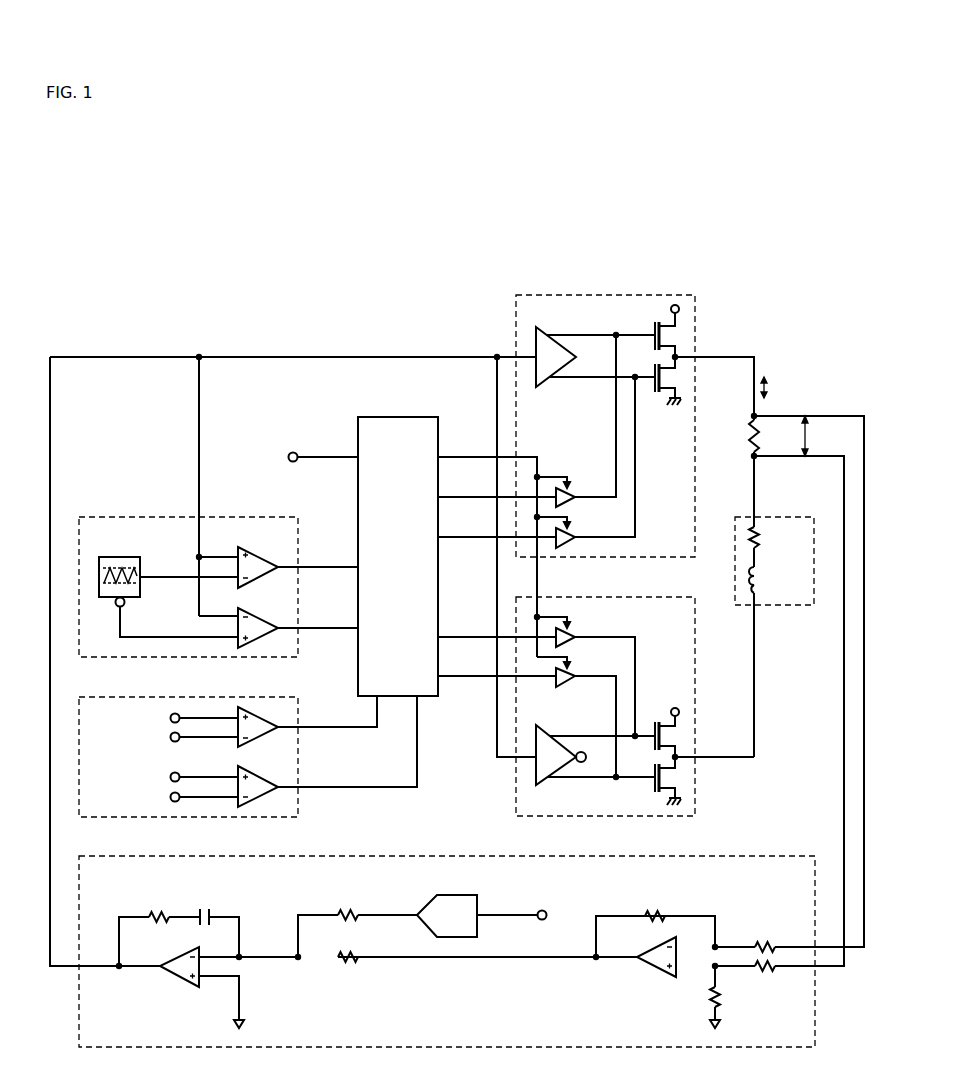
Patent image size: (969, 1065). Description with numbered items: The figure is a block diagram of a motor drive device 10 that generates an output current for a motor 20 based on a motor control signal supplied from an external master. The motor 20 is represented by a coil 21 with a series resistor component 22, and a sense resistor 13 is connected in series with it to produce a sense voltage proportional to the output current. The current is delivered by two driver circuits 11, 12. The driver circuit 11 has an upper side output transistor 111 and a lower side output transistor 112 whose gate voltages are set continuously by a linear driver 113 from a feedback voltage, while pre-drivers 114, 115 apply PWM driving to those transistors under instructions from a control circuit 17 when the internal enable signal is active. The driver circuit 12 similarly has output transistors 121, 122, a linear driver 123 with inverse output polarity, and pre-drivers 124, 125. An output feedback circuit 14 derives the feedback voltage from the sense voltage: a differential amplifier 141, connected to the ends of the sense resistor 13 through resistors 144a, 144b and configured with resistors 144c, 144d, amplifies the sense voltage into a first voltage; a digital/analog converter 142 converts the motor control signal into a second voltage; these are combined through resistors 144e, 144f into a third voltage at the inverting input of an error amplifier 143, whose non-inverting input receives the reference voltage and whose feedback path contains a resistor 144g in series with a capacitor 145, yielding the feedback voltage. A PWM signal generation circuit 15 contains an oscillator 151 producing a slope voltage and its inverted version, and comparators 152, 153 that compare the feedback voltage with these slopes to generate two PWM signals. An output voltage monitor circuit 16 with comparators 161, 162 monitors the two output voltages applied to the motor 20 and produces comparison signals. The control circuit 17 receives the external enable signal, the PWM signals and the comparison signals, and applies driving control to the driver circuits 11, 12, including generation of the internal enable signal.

The motor drive device 10 is at (88, 272).
The driver circuit 11 is at (606, 295).
The driver circuit 12 is at (606, 597).
The sense resistor 13 is at (746, 436).
The output feedback circuit 14 is at (449, 856).
The PWM signal generation circuit 15 is at (140, 517).
The output voltage monitor circuit 16 is at (192, 697).
The control circuit 17 is at (399, 417).
The motor 20 is at (787, 517).
The coil 21 is at (760, 580).
The resistor component 22 is at (760, 538).
The output transistor 111 is at (649, 329).
The output transistor 112 is at (649, 370).
The linear driver 113 is at (545, 330).
The pre-driver 114 is at (573, 497).
The pre-driver 115 is at (573, 537).
The output transistor 121 is at (652, 744).
The output transistor 122 is at (652, 786).
The linear driver 123 is at (542, 786).
The pre-driver 124 is at (573, 639).
The pre-driver 125 is at (573, 679).
The differential amplifier 141 is at (649, 944).
The digital/analog converter 142 is at (446, 895).
The error amplifier 143 is at (172, 984).
The resistor 144a is at (765, 981).
The resistor 144b is at (765, 935).
The resistor 144c is at (706, 997).
The resistor 144d is at (655, 905).
The resistor 144e is at (348, 969).
The resistor 144f is at (348, 905).
The resistor 144g is at (159, 907).
The capacitor 145 is at (204, 907).
The oscillator 151 is at (118, 556).
The comparator 152 is at (255, 556).
The comparator 153 is at (255, 616).
The comparator 161 is at (266, 742).
The comparator 162 is at (258, 763).